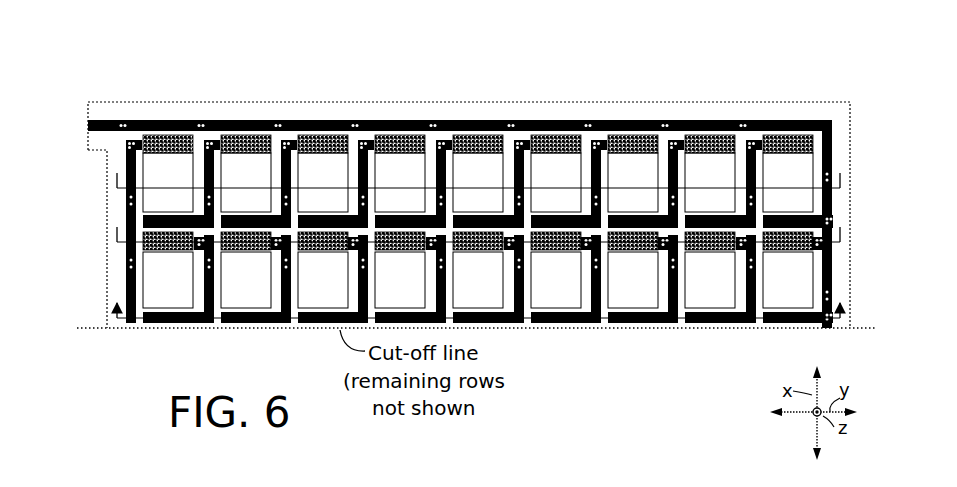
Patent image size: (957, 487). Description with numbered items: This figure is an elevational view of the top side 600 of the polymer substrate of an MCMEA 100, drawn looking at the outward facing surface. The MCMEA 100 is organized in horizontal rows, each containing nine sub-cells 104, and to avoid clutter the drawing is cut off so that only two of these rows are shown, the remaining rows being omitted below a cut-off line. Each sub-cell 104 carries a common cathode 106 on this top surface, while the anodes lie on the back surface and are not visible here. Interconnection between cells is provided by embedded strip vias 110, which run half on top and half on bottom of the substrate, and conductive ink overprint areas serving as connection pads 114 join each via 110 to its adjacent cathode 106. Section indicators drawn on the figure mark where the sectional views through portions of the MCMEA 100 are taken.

The MCMEA 100 is at (462, 172).
The sub-cell 104 is at (563, 140).
The common cathode 106 is at (320, 160).
The embedded strip via 110 is at (127, 150).
The conductive ink overprint area 114 is at (157, 140).
The top side 600 is at (640, 108).